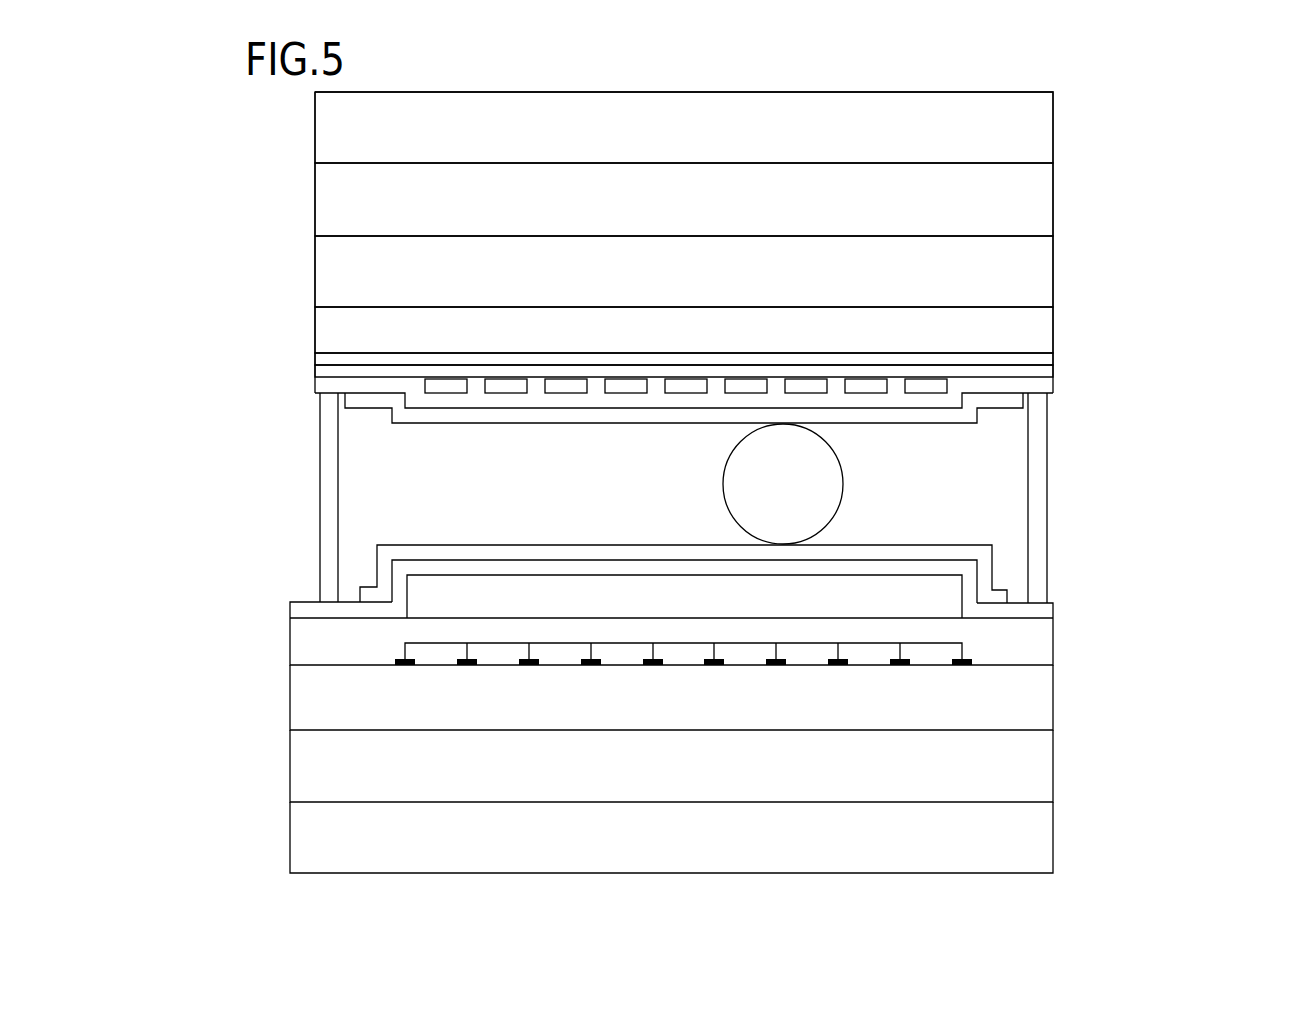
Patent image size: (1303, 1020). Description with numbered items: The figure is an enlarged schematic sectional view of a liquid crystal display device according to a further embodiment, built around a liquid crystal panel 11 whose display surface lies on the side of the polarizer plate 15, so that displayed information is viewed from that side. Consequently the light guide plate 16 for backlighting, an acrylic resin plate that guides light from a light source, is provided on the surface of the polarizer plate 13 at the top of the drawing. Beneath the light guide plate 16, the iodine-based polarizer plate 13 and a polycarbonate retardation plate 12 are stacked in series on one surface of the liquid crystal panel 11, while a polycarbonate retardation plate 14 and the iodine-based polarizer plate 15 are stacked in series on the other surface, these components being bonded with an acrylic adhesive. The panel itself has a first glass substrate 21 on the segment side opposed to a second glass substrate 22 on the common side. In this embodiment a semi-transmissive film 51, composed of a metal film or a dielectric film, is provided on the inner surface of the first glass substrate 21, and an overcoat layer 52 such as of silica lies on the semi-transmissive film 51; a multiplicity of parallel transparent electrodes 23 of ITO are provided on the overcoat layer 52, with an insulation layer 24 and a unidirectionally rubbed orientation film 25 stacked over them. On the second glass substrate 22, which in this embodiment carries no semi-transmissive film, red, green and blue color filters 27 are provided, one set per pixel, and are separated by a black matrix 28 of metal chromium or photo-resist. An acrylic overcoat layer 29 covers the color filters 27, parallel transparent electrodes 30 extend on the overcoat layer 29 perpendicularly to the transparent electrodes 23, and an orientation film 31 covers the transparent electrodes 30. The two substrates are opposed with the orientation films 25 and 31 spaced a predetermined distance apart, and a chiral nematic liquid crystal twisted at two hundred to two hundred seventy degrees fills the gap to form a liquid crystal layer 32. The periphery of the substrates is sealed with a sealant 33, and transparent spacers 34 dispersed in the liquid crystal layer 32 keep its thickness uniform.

The liquid crystal panel 11 is at (270, 306).
The light guide plate 16 is at (1035, 135).
The polarizer plate 13 is at (1025, 212).
The retardation plate 12 is at (1025, 272).
The first glass substrate 21 is at (1012, 330).
The semi-transmissive film 51 is at (1040, 362).
The overcoat layer 52 is at (1042, 373).
The transparent electrodes 23 is at (927, 387).
The insulation layer 24 is at (1042, 387).
The orientation film 25 is at (1002, 402).
The sealant 33 is at (1035, 535).
The transparent spacers 34 is at (825, 482).
The liquid crystal layer 32 is at (990, 522).
The orientation film 31 is at (983, 553).
The transparent electrodes 30 is at (1040, 610).
The overcoat layer 29 is at (1038, 648).
The color filters 27 is at (822, 655).
The black matrix 28 is at (902, 653).
The second glass substrate 22 is at (1033, 710).
The retardation plate 14 is at (1032, 767).
The polarizer plate 15 is at (1032, 838).